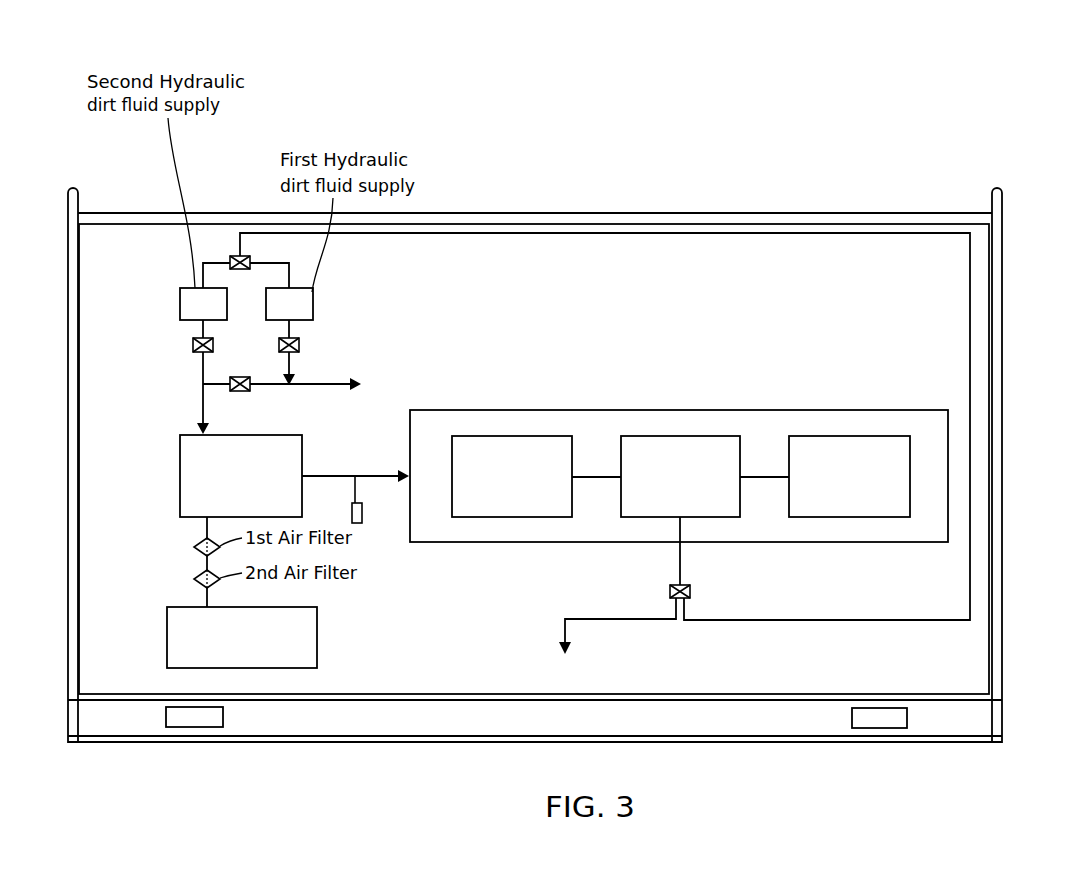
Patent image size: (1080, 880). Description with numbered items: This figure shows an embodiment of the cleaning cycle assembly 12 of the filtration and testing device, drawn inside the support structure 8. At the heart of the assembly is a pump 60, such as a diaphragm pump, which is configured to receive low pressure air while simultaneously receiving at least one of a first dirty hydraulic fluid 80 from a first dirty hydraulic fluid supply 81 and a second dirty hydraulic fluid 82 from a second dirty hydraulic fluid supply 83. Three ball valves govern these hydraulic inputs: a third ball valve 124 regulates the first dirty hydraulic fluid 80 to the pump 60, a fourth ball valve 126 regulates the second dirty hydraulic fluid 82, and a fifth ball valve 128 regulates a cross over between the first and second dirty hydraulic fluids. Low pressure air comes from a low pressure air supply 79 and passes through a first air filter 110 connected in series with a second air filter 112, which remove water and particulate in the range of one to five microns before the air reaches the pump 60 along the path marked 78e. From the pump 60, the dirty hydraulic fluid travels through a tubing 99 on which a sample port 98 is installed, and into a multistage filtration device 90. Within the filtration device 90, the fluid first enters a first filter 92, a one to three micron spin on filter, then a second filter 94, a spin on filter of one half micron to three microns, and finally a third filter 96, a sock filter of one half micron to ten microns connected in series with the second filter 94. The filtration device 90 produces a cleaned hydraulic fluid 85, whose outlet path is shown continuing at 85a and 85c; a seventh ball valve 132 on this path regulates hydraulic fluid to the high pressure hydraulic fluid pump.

The support structure 8 is at (1010, 455).
The cleaning cycle assembly 12 is at (143, 178).
The pump 60 is at (180, 478).
The air line 78e is at (207, 523).
The low pressure air supply 79 is at (167, 636).
The first dirty hydraulic fluid 80 is at (203, 376).
The first dirty hydraulic fluid supply 81 is at (180, 306).
The second dirty hydraulic fluid 82 is at (300, 410).
The second dirty hydraulic fluid supply 83 is at (313, 305).
The cleaned hydraulic fluid 85 is at (682, 566).
The discharge branch 85a is at (583, 618).
The return line 85c is at (487, 236).
The multistage filtration device 90 is at (554, 382).
The first filter 92 is at (512, 436).
The second filter 94 is at (680, 436).
The third filter 96 is at (848, 436).
The sample port 98 is at (363, 510).
The tubing 99 is at (355, 476).
The first air filter 110 is at (194, 580).
The second air filter 112 is at (194, 548).
The third ball valve 124 is at (193, 345).
The fourth ball valve 126 is at (299, 345).
The fifth ball valve 128 is at (240, 377).
The seventh ball valve 132 is at (670, 590).